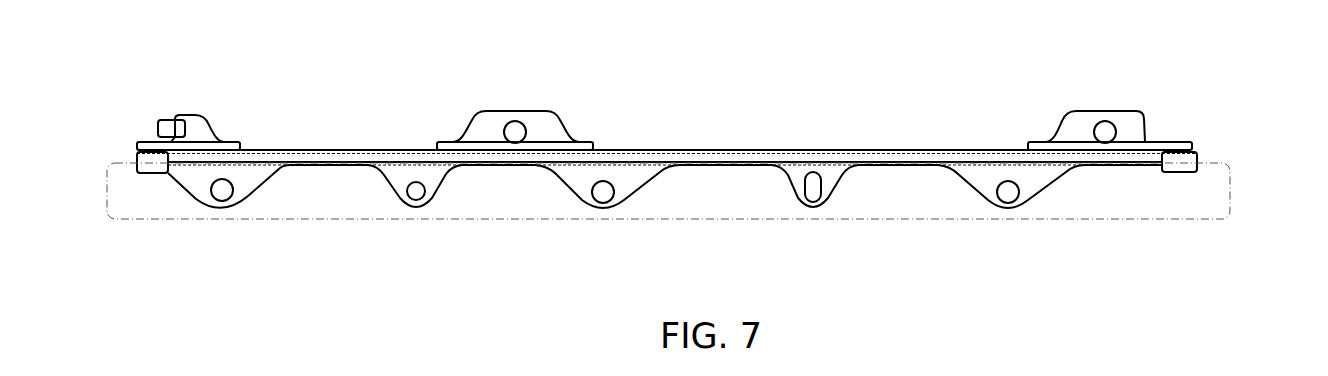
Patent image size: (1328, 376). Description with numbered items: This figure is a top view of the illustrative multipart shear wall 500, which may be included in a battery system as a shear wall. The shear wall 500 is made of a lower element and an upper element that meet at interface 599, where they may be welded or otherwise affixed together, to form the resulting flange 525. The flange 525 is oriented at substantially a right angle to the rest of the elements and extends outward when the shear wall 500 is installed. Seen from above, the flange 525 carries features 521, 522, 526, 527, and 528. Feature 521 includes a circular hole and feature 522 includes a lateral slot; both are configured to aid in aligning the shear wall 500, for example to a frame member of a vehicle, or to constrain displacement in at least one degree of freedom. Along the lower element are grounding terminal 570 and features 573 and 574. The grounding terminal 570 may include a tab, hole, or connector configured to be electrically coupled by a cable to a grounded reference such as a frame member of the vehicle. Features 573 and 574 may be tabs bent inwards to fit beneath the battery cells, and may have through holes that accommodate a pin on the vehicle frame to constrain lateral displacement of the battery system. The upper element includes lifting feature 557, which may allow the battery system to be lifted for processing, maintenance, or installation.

The multipart shear wall 500 is at (1263, 120).
The flange 525 is at (1250, 167).
The feature 521 is at (409, 205).
The feature 522 is at (810, 205).
The feature 526 is at (220, 205).
The feature 527 is at (598, 205).
The feature 528 is at (1003, 205).
The lifting feature 557 is at (150, 176).
The grounding terminal 570 is at (169, 118).
The feature 573 is at (522, 110).
The feature 574 is at (1121, 110).
The interface 599 is at (1148, 222).